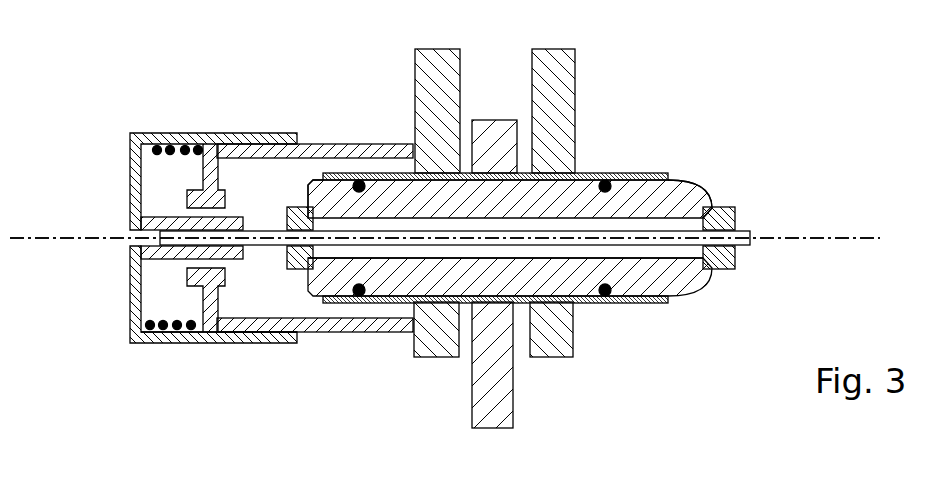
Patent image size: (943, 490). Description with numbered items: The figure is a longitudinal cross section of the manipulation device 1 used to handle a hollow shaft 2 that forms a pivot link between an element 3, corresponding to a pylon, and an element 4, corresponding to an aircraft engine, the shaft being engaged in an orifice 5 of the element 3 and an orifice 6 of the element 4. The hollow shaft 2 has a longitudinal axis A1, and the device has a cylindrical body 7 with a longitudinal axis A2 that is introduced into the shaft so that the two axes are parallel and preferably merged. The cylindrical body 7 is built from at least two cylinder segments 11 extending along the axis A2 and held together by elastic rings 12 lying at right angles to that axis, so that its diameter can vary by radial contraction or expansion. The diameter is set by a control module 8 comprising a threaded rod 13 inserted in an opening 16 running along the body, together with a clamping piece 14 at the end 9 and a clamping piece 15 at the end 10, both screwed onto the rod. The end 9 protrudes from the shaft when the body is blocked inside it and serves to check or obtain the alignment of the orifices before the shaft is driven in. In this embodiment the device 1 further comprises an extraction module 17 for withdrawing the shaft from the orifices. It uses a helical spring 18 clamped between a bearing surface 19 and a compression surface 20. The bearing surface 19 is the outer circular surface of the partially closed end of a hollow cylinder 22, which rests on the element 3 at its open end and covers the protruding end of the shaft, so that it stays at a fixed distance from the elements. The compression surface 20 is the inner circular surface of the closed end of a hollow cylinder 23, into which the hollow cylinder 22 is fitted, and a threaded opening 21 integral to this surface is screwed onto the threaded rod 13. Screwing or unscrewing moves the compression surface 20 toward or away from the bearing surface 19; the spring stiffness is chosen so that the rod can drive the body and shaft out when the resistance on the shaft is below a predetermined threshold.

The manipulation device 1 is at (131, 108).
The hollow shaft 2 is at (635, 175).
The element 3 is at (550, 68).
The element 4 is at (497, 408).
The orifice 5 is at (378, 303).
The orifice 6 is at (468, 303).
The cylindrical body 7 is at (578, 176).
The control module 8 is at (284, 290).
The end 9 is at (680, 187).
The end 10 is at (322, 196).
The cylinder segments 11 is at (400, 185).
The elastic ring 12 is at (359, 182).
The threaded rod 13 is at (678, 247).
The clamping piece 14 is at (720, 208).
The clamping piece 15 is at (285, 208).
The opening 16 is at (533, 254).
The extraction module 17 is at (141, 360).
The helical spring 18 is at (176, 328).
The bearing surface 19 is at (190, 303).
The compression surface 20 is at (150, 185).
The threaded opening 21 is at (167, 218).
The hollow cylinder 22 is at (320, 331).
The hollow cylinder 23 is at (208, 334).
The longitudinal axis A1 is at (830, 238).
The longitudinal axis A2 is at (777, 240).